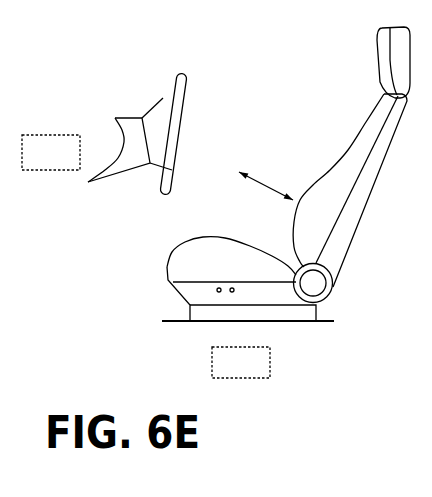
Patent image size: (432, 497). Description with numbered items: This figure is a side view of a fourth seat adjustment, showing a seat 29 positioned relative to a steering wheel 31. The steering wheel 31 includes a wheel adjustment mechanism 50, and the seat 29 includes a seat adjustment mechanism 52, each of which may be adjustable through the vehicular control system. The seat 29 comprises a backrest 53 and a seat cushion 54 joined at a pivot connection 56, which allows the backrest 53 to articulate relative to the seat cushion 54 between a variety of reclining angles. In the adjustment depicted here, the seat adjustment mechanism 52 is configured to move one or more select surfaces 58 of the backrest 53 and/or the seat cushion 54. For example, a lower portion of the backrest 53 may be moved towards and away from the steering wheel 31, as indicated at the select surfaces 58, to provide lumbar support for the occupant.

The seat 29 is at (259, 185).
The steering wheel 31 is at (136, 101).
The wheel adjustment mechanism 50 is at (121, 143).
The seat adjustment mechanism 52 is at (246, 322).
The backrest 53 is at (346, 203).
The seat cushion 54 is at (177, 288).
The pivot connection 56 is at (313, 285).
The select surfaces 58 is at (314, 185).